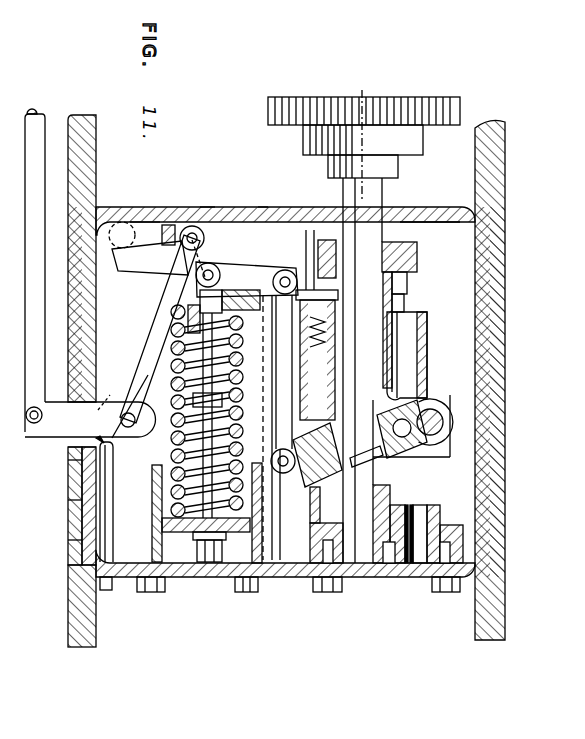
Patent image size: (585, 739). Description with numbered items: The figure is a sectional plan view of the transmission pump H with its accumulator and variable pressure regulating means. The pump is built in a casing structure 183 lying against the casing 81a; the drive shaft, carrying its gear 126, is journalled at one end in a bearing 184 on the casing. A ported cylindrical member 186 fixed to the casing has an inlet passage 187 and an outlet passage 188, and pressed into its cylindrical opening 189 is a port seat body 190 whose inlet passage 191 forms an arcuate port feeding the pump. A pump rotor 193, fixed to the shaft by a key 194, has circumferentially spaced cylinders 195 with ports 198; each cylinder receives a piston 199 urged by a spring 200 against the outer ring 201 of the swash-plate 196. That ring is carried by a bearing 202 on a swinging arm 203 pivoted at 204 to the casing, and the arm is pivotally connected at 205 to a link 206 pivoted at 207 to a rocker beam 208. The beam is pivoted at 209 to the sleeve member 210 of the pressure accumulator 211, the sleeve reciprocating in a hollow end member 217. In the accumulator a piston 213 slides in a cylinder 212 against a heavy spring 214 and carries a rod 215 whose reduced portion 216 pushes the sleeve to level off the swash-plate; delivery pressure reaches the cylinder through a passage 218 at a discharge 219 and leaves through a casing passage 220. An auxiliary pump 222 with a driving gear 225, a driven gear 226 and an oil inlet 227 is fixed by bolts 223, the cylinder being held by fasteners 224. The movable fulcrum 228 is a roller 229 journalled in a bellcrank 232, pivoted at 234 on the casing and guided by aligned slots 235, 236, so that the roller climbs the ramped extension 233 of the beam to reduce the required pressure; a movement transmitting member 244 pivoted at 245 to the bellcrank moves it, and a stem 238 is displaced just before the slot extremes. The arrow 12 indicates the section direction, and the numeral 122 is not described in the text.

The casing 81a is at (84, 118).
The gear 126 is at (366, 96).
The pump H is at (232, 196).
The arrow direction 12 is at (102, 440).
The oil inlet 227 is at (116, 207).
The bellcrank 232 is at (148, 207).
The movable fulcrum 228 is at (188, 214).
The roller 229 is at (205, 207).
The movement transmitting member 244 is at (40, 268).
The pivotal connection 245 is at (26, 432).
The pivotal support 209 is at (116, 264).
The sleeve member 210 is at (160, 312).
The hollow end member 217 is at (166, 290).
The pivot 234 is at (100, 408).
The link 122 is at (230, 270).
The rocker beam 208 is at (236, 268).
The pivot 207 is at (262, 266).
The outlet passage 188 is at (300, 268).
The ported cylindrical member 186 is at (318, 262).
The link 206 is at (270, 370).
The pivotal connection 205 is at (292, 472).
The passage 218 is at (308, 530).
The bearing 184 is at (318, 475).
The spring 200 is at (316, 335).
The port seat body 190 is at (382, 255).
The cylindrical opening 189 is at (420, 250).
The inlet passage 191 is at (383, 297).
The inlet passage 187 is at (425, 292).
The key 194 is at (388, 340).
The ports 198 is at (425, 300).
The cylinders 195 is at (388, 376).
The piston 199 is at (420, 358).
The pump rotor 193 is at (432, 346).
The outer ring 201 is at (362, 460).
The swinging arm 203 is at (386, 462).
The swash-plate 196 is at (403, 448).
The bearing 202 is at (430, 440).
The auxiliary pump 222 is at (425, 598).
The driving gear 225 is at (388, 577).
The driven gear 226 is at (403, 577).
The bolts 223 is at (447, 592).
The reduced portion 216 is at (170, 350).
The spring 214 is at (200, 412).
The rod 215 is at (156, 462).
The cylinder 212 is at (116, 468).
The piston 213 is at (113, 515).
The pressure accumulator 211 is at (205, 565).
The casing passage 220 is at (192, 560).
The discharge 219 is at (258, 577).
The stem 238 is at (106, 590).
The fasteners 224 is at (150, 592).
The casing structure 183 is at (318, 577).
The ramped extension 233 is at (80, 465).
The slot 235 is at (78, 505).
The slot 236 is at (72, 545).
The pivot 204 is at (495, 438).